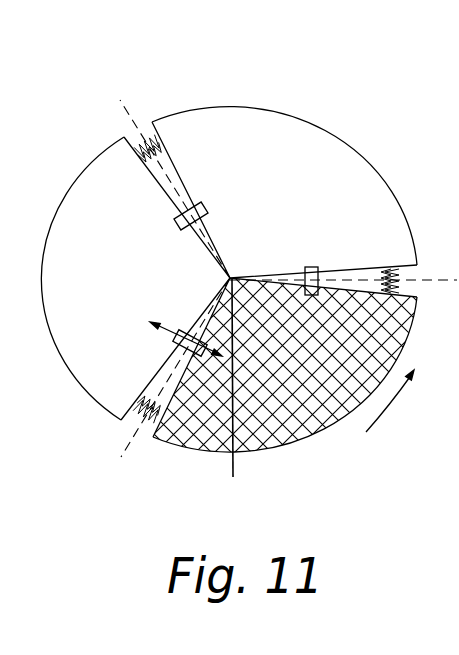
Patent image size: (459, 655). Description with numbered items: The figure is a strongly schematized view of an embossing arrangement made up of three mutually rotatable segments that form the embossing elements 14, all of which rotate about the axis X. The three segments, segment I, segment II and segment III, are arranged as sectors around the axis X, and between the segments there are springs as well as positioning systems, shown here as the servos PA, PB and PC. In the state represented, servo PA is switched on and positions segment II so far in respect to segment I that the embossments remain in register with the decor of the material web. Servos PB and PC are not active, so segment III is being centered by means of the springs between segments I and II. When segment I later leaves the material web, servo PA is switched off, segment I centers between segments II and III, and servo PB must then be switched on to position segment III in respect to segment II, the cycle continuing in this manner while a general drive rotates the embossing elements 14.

The embossing elements 14 is at (229, 277).
The servo PA is at (187, 330).
The servo PB is at (207, 212).
The servo PC is at (305, 266).
The segment I is at (229, 365).
The segment II is at (82, 278).
The segment III is at (284, 186).
The axis X is at (230, 396).